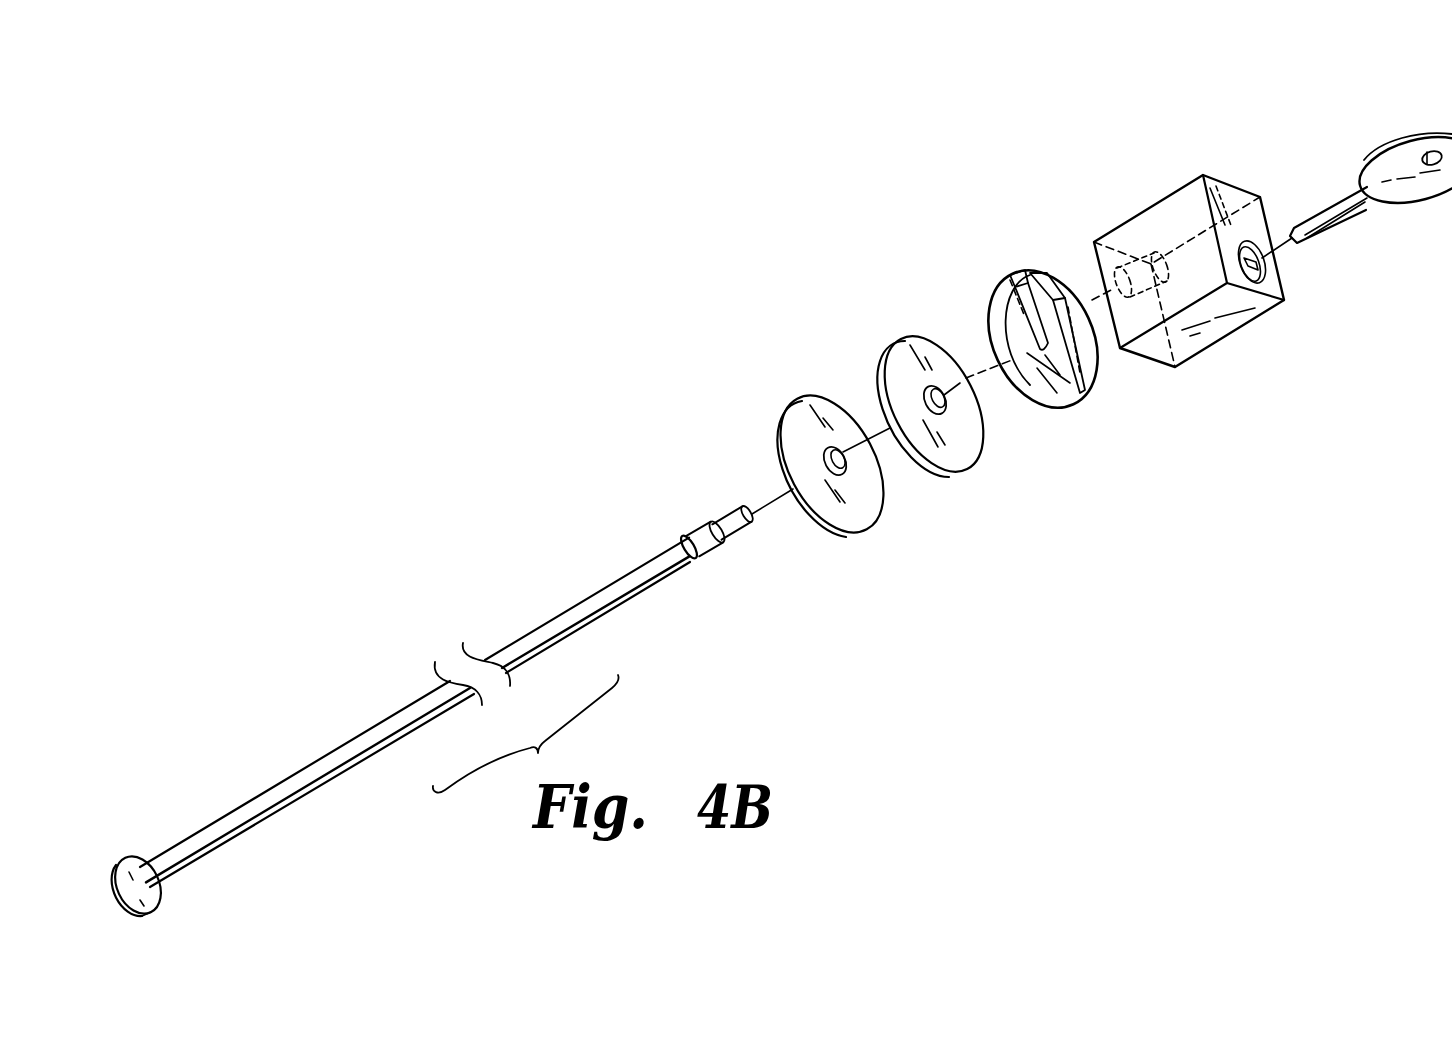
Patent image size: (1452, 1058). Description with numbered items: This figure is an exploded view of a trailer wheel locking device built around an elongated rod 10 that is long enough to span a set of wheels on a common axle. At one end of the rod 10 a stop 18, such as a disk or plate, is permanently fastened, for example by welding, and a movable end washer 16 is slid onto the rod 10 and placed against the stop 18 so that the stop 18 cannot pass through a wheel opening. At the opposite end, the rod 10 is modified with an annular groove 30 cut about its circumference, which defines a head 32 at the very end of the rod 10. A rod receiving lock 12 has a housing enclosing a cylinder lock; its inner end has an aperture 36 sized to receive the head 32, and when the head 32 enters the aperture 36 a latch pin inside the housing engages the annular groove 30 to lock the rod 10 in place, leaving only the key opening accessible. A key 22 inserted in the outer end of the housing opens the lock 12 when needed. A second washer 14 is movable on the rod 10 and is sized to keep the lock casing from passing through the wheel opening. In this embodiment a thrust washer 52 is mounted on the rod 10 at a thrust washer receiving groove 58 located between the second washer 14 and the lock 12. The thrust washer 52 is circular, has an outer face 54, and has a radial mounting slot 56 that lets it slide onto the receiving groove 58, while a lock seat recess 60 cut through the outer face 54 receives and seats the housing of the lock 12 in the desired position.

The rod 10 is at (457, 665).
The rod receiving lock 12 is at (1159, 245).
The second washer 14 is at (985, 463).
The movable end washer 16 is at (878, 521).
The stop 18 is at (127, 855).
The key 22 is at (1400, 137).
The annular groove 30 is at (727, 535).
The head 32 is at (732, 510).
The aperture 36 is at (1100, 267).
The thrust washer 52 is at (1053, 349).
The outer face 54 is at (1093, 372).
The radial mounting slot 56 is at (1037, 267).
The thrust washer receiving groove 58 is at (685, 540).
The lock seat recess 60 is at (1010, 350).